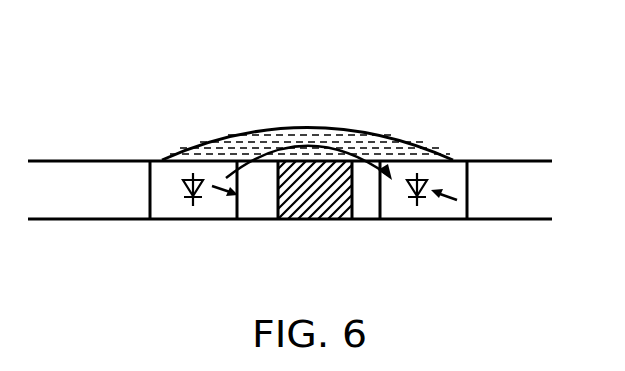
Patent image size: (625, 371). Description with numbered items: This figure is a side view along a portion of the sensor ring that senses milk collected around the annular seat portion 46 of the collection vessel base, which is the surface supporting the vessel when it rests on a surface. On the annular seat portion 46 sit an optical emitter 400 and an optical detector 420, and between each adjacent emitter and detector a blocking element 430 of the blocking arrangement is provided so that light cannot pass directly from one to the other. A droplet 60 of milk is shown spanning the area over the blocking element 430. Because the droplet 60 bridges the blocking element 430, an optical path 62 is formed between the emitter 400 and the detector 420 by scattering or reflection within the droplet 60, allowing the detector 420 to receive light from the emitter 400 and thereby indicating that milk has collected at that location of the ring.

The annular seat portion 46 is at (486, 158).
The droplet 60 is at (185, 139).
The optical path 62 is at (302, 140).
The optical emitter 400 is at (186, 220).
The blocking element 430 is at (296, 220).
The optical detector 420 is at (407, 220).